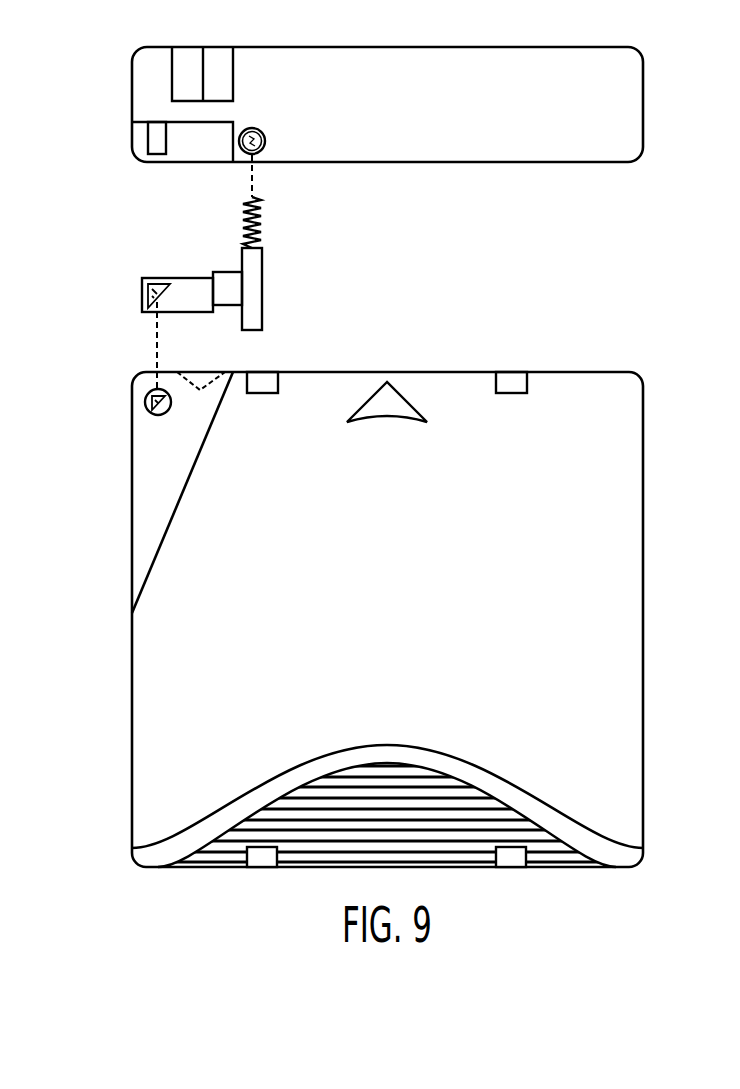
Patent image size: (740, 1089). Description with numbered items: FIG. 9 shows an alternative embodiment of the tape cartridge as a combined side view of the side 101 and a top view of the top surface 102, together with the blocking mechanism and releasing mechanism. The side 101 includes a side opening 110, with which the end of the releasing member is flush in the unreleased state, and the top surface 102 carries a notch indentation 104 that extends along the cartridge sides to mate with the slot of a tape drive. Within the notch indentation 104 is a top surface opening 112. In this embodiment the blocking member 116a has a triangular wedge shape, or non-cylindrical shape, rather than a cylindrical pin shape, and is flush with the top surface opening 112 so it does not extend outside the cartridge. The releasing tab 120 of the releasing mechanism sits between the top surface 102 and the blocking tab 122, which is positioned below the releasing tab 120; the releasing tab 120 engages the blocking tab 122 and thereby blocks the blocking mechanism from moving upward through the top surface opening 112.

The side 101 is at (150, 78).
The top surface 102 is at (145, 731).
The notch indentation 104 is at (140, 144).
The side opening 110 is at (265, 137).
The top surface opening 112 is at (158, 416).
The blocking member 116a is at (155, 162).
The releasing tab 120 is at (213, 270).
The blocking tab 122 is at (155, 278).